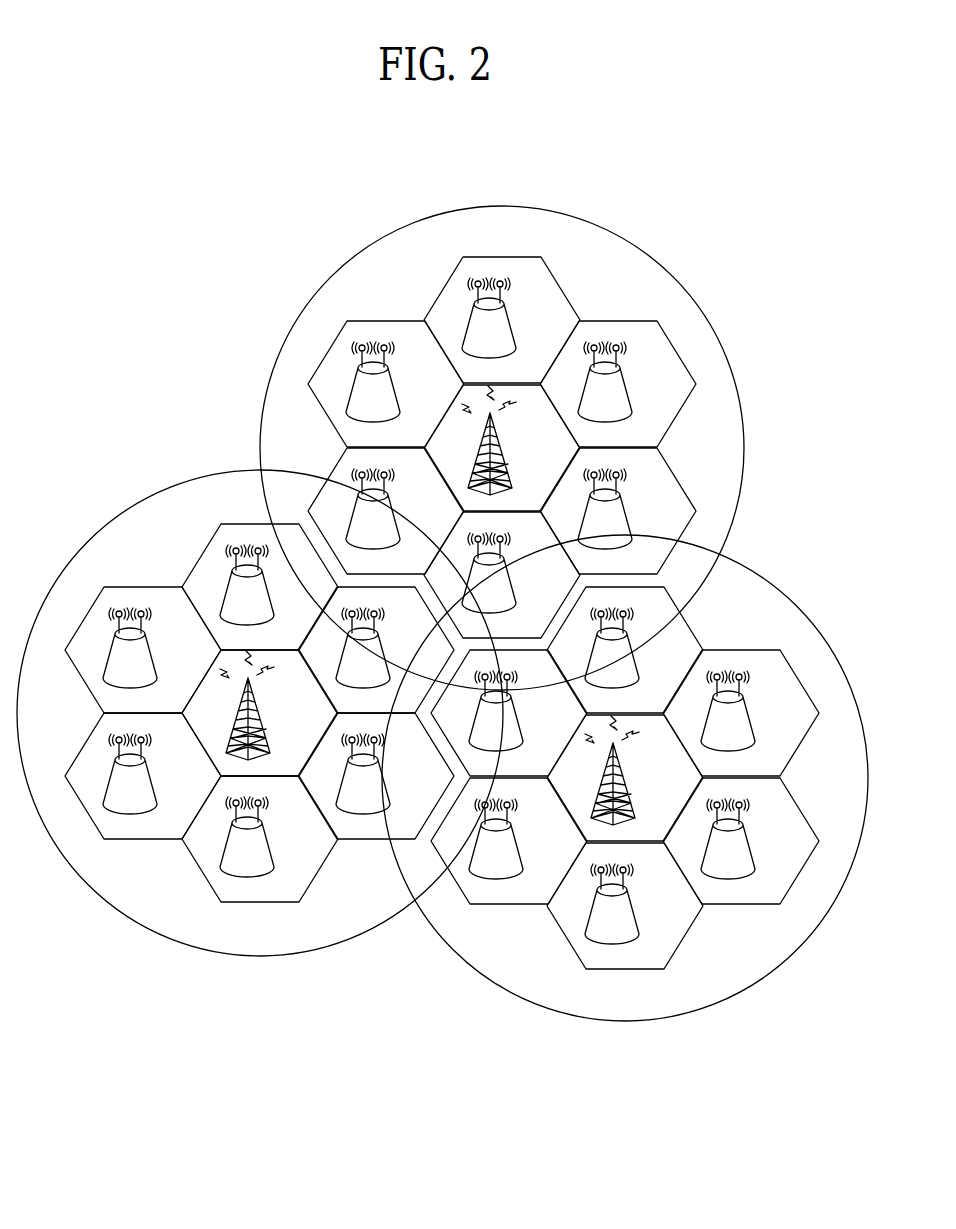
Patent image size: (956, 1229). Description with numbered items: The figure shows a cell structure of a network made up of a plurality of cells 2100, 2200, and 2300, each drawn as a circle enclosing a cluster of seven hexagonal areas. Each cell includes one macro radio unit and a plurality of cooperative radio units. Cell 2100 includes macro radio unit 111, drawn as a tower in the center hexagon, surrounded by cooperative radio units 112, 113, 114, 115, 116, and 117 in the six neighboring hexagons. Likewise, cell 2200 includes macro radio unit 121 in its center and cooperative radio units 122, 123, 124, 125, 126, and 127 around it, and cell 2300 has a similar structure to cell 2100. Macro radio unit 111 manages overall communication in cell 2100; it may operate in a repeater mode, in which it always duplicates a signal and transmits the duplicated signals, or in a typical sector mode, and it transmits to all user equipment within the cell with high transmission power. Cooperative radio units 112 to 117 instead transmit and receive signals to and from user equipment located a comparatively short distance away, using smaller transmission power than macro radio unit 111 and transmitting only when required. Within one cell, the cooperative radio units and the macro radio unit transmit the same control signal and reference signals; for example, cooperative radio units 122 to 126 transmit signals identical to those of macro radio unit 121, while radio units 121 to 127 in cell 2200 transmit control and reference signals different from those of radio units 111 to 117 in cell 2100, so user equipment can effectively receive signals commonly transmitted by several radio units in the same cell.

The cell 2100 is at (200, 470).
The cell 2200 is at (620, 241).
The cell 2300 is at (490, 980).
The macro radio unit 111 is at (262, 714).
The cooperative radio unit 112 is at (150, 779).
The cooperative radio unit 113 is at (267, 842).
The cooperative radio unit 114 is at (383, 779).
The cooperative radio unit 115 is at (383, 653).
The cooperative radio unit 116 is at (267, 590).
The cooperative radio unit 117 is at (150, 653).
The macro radio unit 121 is at (497, 444).
The cooperative radio unit 122 is at (393, 514).
The cooperative radio unit 123 is at (509, 578).
The cooperative radio unit 124 is at (625, 514).
The cooperative radio unit 125 is at (625, 387).
The cooperative radio unit 126 is at (509, 323).
The cooperative radio unit 127 is at (393, 387).